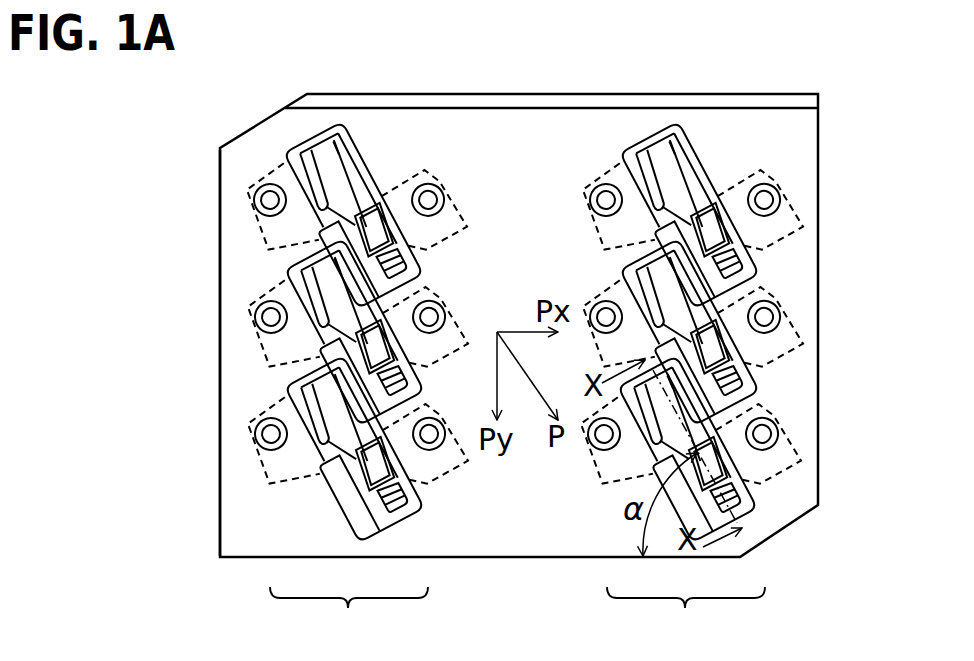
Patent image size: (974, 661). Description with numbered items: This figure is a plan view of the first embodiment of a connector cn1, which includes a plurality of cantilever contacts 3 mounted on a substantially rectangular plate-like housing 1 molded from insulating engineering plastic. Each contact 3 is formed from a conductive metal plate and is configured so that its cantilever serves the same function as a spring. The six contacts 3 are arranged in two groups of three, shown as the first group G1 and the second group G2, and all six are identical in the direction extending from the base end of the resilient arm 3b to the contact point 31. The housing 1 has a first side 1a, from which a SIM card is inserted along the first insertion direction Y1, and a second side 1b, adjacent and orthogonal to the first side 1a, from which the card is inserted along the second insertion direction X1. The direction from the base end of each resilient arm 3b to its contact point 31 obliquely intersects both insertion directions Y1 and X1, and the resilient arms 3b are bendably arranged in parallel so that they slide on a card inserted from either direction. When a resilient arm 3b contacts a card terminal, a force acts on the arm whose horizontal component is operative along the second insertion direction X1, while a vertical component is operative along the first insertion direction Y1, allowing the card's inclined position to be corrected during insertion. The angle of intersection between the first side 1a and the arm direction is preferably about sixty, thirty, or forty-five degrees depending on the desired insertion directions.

The housing 1 is at (800, 523).
The first side 1a is at (589, 93).
The second side 1b is at (220, 501).
The cantilever contact 3 is at (307, 157).
The resilient arm 3b is at (335, 160).
The contact point 31 is at (368, 232).
The connector cn1 is at (852, 155).
The second insertion direction X1 is at (207, 327).
The first insertion direction Y1 is at (520, 82).
The first group G1 is at (349, 619).
The second group G2 is at (686, 619).